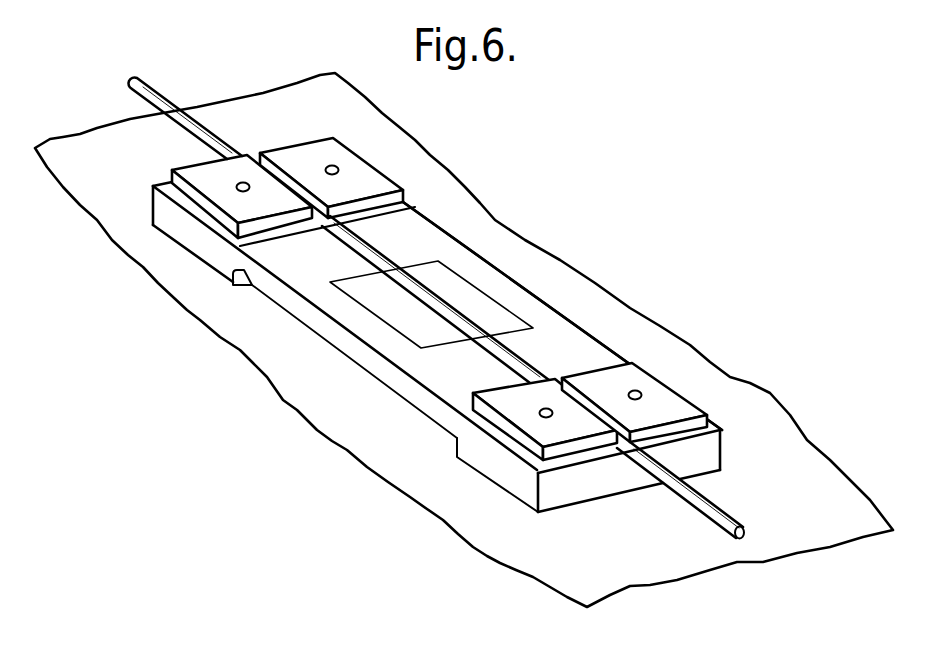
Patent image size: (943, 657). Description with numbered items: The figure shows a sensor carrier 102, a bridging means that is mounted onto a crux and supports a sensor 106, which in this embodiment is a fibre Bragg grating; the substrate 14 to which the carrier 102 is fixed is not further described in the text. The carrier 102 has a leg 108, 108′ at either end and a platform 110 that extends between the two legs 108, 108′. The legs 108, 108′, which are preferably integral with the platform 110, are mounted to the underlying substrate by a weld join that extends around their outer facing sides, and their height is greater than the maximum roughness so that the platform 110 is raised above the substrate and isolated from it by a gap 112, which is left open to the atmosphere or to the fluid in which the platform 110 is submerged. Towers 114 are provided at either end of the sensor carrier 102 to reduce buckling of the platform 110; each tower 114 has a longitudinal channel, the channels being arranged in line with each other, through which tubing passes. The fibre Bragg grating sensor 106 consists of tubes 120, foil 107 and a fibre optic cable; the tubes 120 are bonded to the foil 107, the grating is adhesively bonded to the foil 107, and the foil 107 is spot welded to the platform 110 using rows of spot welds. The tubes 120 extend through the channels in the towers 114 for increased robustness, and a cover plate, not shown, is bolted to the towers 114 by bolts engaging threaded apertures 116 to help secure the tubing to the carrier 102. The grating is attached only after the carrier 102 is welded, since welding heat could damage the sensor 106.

The strip 14 is at (370, 412).
The sensor carrier 102 is at (474, 241).
The sensor 106 is at (472, 327).
The foil 107 is at (387, 307).
The leg 108 is at (500, 470).
The leg 108′ is at (192, 237).
The platform 110 is at (480, 380).
The gap 112 is at (275, 297).
The tower 114 is at (670, 400).
The threaded aperture 116 is at (540, 412).
The tube 120 is at (708, 513).